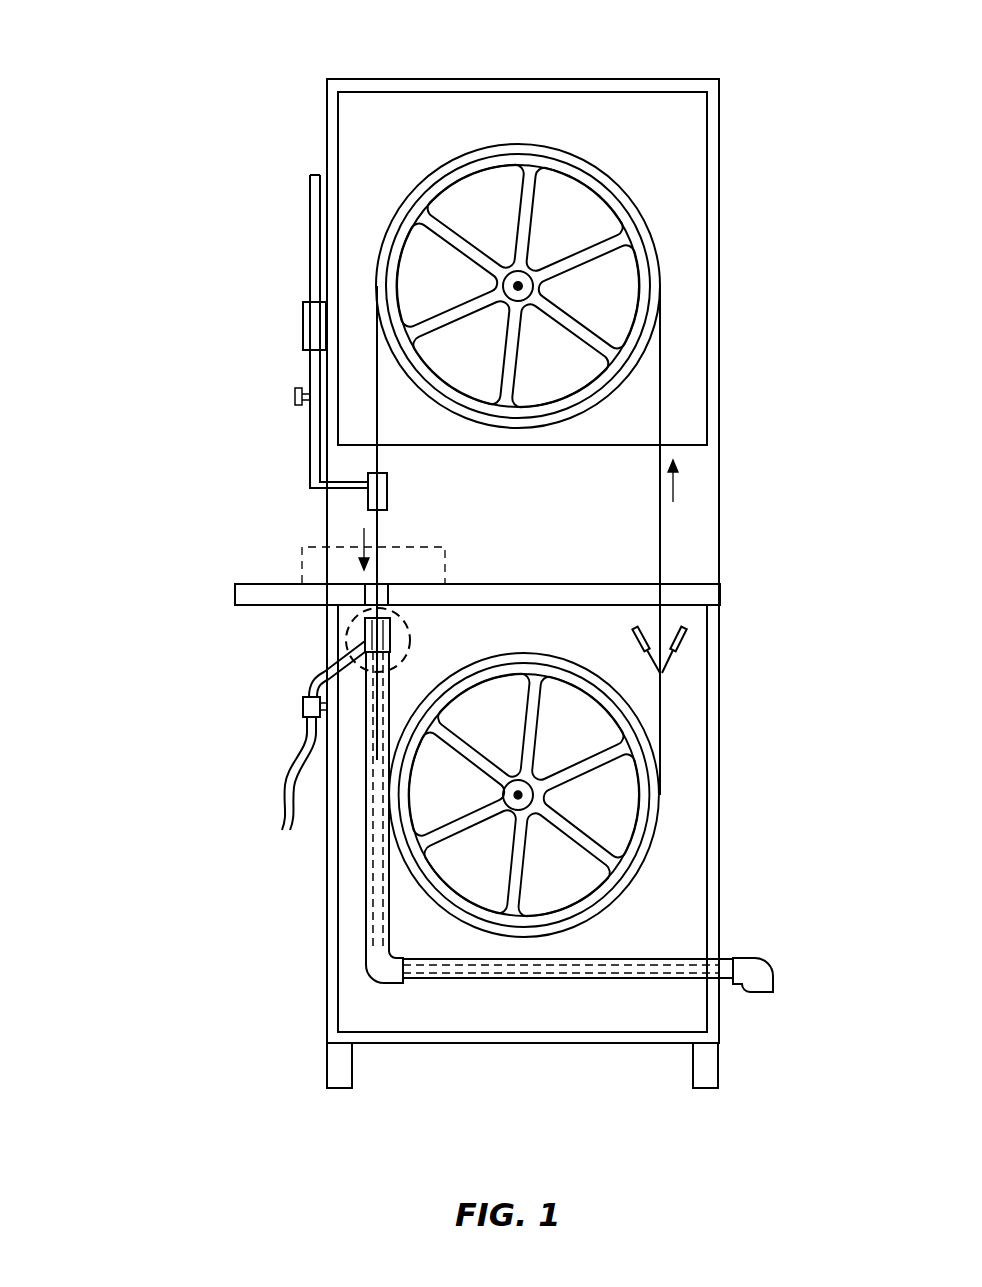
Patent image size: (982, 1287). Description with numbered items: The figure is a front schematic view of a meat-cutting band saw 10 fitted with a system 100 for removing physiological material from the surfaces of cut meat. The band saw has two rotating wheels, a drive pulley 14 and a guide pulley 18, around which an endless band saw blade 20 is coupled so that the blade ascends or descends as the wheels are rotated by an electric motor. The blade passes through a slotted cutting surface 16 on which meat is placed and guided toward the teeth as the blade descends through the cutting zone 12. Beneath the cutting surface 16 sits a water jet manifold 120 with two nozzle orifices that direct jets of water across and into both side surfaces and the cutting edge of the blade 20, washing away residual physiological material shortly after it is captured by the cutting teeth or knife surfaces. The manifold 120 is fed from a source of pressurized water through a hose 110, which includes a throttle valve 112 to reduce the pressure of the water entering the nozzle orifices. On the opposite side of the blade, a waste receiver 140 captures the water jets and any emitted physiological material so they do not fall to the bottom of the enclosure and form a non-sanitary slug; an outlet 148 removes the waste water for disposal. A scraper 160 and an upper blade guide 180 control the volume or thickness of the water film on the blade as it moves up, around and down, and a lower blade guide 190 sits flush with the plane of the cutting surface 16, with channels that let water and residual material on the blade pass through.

The meat-cutting band saw 10 is at (792, 101).
The cutting zone 12 is at (302, 562).
The drive pulley 14 is at (615, 862).
The slotted cutting surface 16 is at (508, 583).
The guide pulley 18 is at (620, 238).
The band saw blade 20 is at (378, 537).
The system for removing physiological material 100 is at (188, 667).
The hose 110 is at (283, 788).
The throttle valve 112 is at (303, 705).
The water jet manifold 120 is at (365, 628).
The waste receiver 140 is at (366, 858).
The outlet 148 is at (773, 972).
The scraper 160 is at (670, 662).
The upper blade guide 180 is at (368, 494).
The lower blade guide 190 is at (392, 592).